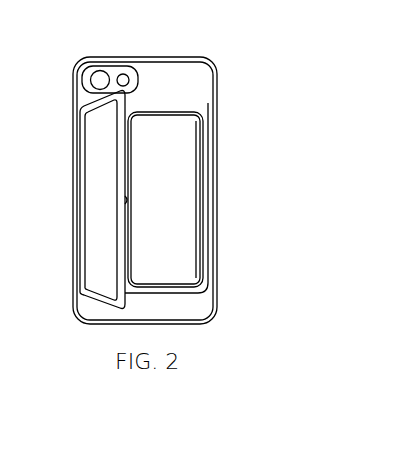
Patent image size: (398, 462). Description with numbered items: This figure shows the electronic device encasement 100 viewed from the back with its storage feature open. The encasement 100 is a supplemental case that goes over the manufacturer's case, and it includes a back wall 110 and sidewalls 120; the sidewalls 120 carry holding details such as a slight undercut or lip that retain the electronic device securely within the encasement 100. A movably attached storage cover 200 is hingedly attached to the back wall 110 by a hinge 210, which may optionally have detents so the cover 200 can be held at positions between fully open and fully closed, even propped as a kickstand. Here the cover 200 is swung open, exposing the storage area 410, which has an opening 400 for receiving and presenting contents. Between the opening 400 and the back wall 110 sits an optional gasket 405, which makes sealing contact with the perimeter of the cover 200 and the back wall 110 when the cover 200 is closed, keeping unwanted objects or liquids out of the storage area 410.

The electronic device encasement 100 is at (62, 271).
The back wall 110 is at (163, 303).
The sidewalls 120 is at (143, 56).
The storage cover 200 is at (97, 160).
The hinge 210 is at (78, 208).
The opening 400 is at (197, 223).
The gasket 405 is at (203, 179).
The storage area 410 is at (188, 133).